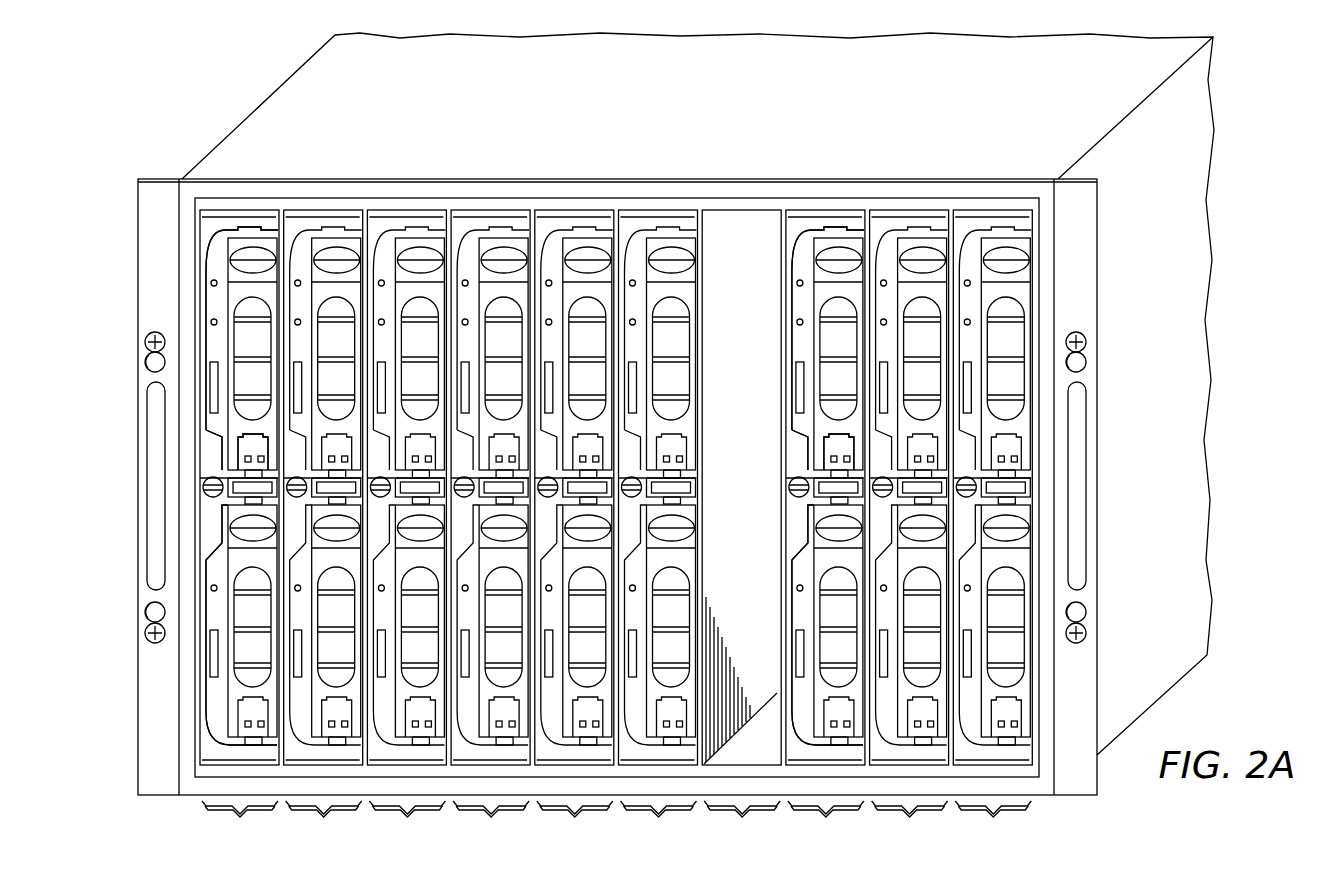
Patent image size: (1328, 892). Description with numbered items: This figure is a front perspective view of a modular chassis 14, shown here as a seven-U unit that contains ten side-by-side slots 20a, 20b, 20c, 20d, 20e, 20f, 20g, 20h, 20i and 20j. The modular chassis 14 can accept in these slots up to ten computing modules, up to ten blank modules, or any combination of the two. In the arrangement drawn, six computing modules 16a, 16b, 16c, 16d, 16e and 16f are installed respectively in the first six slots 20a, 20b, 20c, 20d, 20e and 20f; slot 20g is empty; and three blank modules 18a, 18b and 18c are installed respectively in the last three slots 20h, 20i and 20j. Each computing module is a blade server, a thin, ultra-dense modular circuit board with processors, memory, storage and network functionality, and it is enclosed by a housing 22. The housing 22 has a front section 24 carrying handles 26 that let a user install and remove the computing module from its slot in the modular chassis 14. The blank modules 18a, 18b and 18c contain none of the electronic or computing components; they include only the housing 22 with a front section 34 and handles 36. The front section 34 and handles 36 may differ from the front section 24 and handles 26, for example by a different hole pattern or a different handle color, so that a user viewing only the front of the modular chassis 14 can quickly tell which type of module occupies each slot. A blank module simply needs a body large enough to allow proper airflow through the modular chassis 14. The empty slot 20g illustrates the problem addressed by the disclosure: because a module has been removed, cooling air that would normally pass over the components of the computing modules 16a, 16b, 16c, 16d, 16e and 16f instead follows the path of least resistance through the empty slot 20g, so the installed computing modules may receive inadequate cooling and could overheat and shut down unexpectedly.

The modular chassis 14 is at (752, 106).
The computing module 16a is at (249, 210).
The computing module 16b is at (333, 210).
The computing module 16c is at (416, 210).
The computing module 16d is at (500, 210).
The computing module 16e is at (584, 210).
The computing module 16f is at (668, 210).
The blank module 18a is at (835, 210).
The blank module 18b is at (919, 210).
The blank module 18c is at (1002, 210).
The slot 20a is at (239, 528).
The slot 20b is at (323, 528).
The slot 20c is at (406, 528).
The slot 20d is at (490, 528).
The slot 20e is at (574, 528).
The slot 20f is at (658, 528).
The slot 20g is at (741, 528).
The slot 20h is at (825, 528).
The slot 20i is at (909, 528).
The slot 20j is at (992, 528).
The housing 22 is at (727, 241).
The front section 24 is at (238, 447).
The handles 26 is at (213, 300).
The front section 34 is at (826, 442).
The handles 36 is at (802, 303).